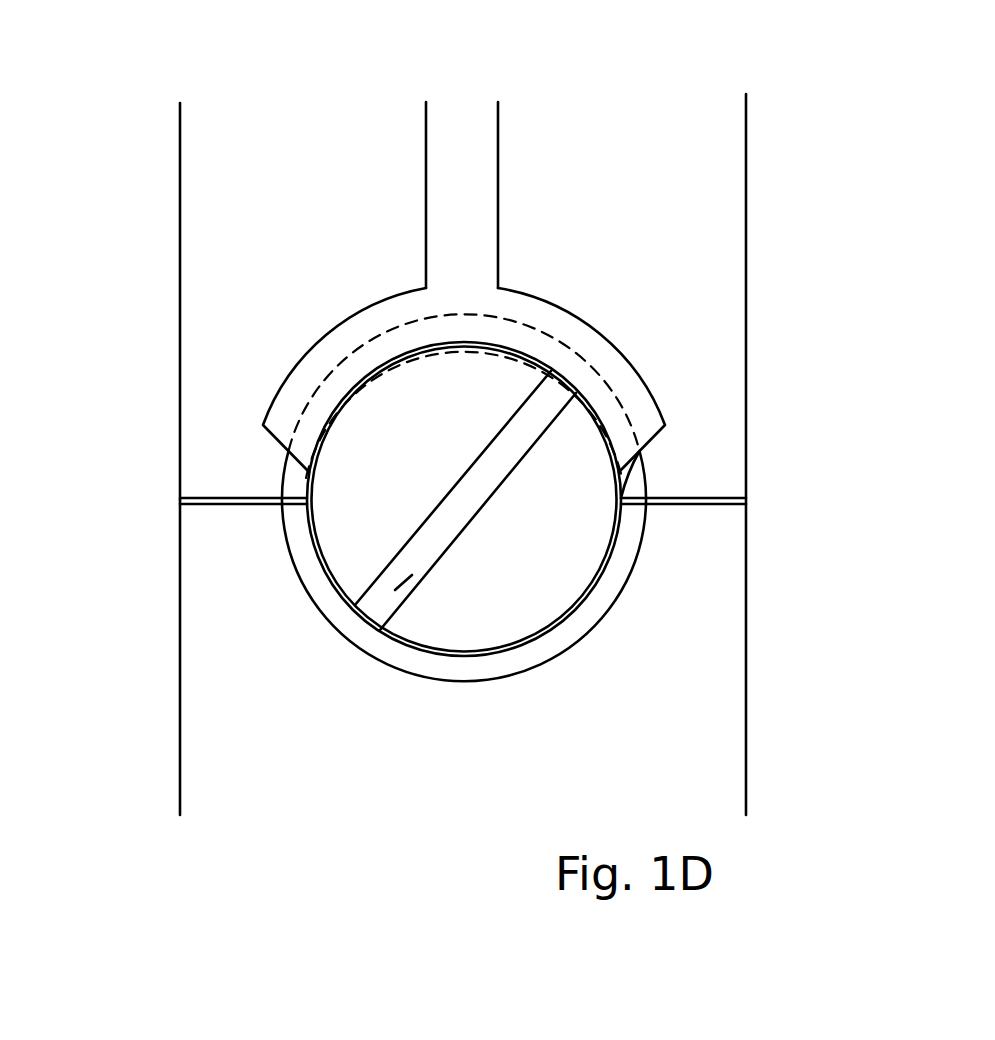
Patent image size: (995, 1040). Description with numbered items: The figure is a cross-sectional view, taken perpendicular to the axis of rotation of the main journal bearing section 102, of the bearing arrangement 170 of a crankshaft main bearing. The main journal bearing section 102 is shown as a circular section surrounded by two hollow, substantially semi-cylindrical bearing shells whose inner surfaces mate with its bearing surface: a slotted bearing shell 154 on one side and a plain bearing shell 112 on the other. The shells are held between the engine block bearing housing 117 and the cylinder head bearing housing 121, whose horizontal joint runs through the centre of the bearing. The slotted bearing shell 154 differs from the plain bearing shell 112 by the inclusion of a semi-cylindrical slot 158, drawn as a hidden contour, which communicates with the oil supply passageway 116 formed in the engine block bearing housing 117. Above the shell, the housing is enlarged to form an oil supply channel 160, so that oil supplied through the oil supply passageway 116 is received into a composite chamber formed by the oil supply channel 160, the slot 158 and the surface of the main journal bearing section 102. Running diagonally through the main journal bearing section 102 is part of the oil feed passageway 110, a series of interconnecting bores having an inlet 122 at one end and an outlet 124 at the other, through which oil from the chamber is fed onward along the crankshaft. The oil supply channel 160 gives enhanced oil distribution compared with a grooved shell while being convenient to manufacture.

The bearing arrangement 170 is at (133, 90).
The oil supply passageway 116 is at (484, 138).
The engine block bearing housing 117 is at (213, 215).
The oil supply channel 160 is at (557, 318).
The slot 158 is at (340, 365).
The inlet 122 is at (555, 380).
The main journal bearing section 102 is at (333, 433).
The slotted bearing shell 154 is at (632, 470).
The plain bearing shell 112 is at (635, 522).
The cylinder head bearing housing 121 is at (207, 742).
The outlet 124 is at (375, 613).
The oil feed passageway 110 is at (420, 570).